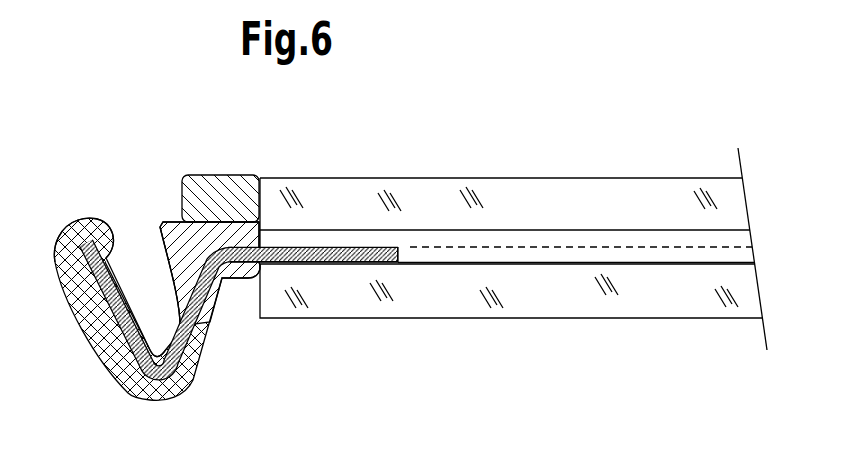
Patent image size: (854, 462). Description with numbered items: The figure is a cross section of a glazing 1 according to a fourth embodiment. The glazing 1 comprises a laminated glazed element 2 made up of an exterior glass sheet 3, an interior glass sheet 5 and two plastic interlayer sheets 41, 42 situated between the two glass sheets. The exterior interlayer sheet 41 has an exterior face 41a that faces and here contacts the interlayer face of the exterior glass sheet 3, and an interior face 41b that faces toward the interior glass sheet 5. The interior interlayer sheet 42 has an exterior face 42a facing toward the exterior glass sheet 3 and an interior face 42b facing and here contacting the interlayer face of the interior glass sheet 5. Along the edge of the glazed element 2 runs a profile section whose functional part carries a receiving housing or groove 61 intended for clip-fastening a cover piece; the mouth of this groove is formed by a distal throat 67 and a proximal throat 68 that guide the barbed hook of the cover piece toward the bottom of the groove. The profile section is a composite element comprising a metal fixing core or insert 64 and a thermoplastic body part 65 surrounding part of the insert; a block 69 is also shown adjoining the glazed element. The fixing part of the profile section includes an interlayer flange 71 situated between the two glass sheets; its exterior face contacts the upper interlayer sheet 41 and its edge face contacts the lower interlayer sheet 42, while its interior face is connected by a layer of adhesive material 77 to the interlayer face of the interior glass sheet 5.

The glazing 1 is at (539, 216).
The laminated glazed element 2 is at (385, 178).
The exterior glass sheet 3 is at (618, 192).
The interior glass sheet 5 is at (580, 305).
The exterior interlayer sheet 41 is at (728, 240).
The exterior face of the exterior interlayer sheet 41a is at (533, 230).
The interior face of the exterior interlayer sheet 41b is at (463, 249).
The interior interlayer sheet 42 is at (726, 257).
The exterior face of the interior interlayer sheet 42a is at (668, 246).
The interior face of the interior interlayer sheet 42b is at (645, 265).
The receiving housing or groove 61 is at (135, 284).
The fixing core or insert 64 is at (178, 364).
The body part 65 is at (100, 338).
The distal throat 67 is at (100, 232).
The proximal throat 68 is at (162, 222).
The spacer block 69 is at (220, 192).
The interlayer flange 71 is at (308, 247).
The layer of adhesive material 77 is at (343, 263).